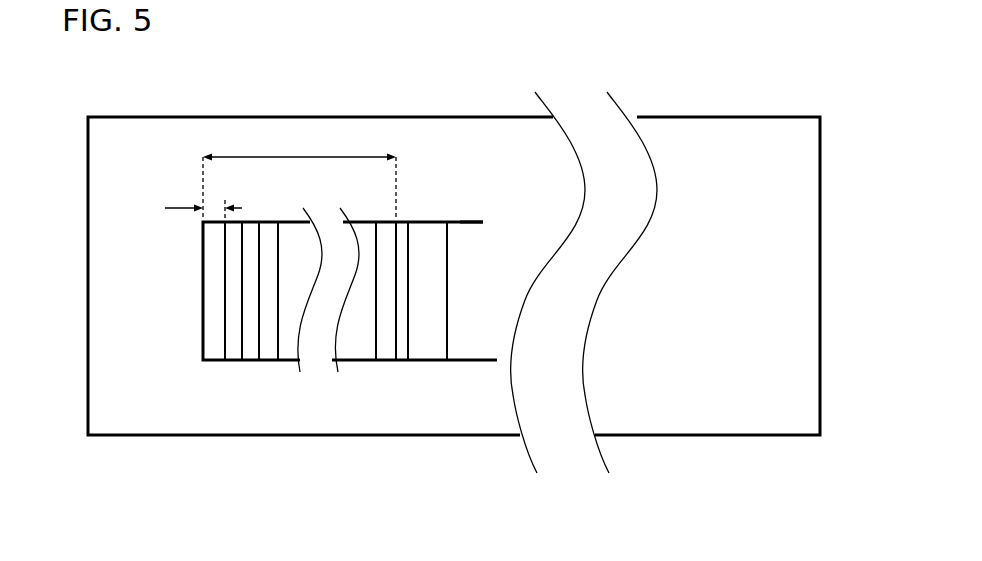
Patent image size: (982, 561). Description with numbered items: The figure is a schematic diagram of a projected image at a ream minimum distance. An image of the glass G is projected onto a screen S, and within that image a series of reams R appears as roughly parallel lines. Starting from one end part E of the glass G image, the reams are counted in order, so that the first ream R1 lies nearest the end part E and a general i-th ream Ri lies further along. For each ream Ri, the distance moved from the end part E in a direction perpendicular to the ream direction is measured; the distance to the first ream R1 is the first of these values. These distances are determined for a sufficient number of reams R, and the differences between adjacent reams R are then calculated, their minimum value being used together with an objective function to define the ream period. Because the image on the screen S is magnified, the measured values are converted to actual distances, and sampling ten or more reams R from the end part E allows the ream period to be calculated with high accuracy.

The screen S is at (821, 233).
The end part E is at (202, 294).
The first ream R1 is at (222, 346).
The ream R is at (272, 350).
The i-th ream Ri is at (396, 350).
The glass G is at (469, 221).